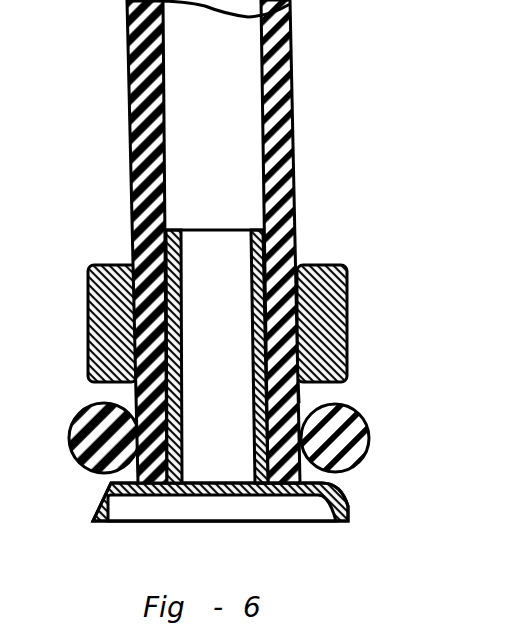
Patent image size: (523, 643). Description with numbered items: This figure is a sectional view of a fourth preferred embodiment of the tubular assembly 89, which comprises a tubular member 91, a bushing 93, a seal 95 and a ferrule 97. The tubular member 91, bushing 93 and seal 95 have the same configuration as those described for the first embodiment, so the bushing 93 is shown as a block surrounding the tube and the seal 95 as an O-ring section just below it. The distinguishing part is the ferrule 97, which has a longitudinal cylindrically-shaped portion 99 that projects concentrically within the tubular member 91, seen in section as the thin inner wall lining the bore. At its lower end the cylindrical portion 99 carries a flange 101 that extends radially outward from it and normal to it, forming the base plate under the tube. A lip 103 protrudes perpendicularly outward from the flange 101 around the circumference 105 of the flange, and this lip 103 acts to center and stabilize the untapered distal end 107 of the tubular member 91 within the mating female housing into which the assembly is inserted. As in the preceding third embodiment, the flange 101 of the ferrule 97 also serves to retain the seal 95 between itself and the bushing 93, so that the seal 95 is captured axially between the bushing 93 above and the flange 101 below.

The tubular assembly 89 is at (267, 284).
The tubular member 91 is at (295, 47).
The bushing 93 is at (348, 291).
The seal 95 is at (368, 420).
The ferrule 97 is at (262, 237).
The longitudinal cylindrically-shaped portion 99 is at (253, 417).
The flange 101 is at (293, 479).
The lip 103 is at (350, 510).
The circumference 105 is at (345, 484).
The untapered distal end 107 is at (300, 393).